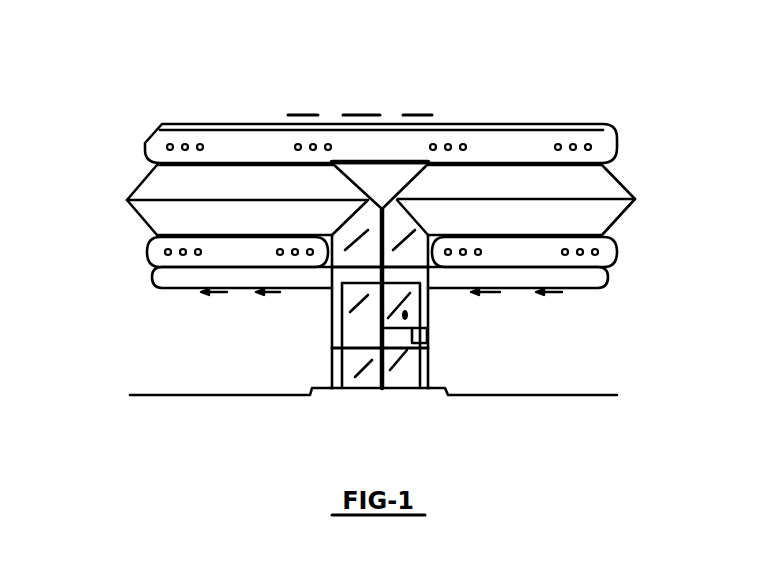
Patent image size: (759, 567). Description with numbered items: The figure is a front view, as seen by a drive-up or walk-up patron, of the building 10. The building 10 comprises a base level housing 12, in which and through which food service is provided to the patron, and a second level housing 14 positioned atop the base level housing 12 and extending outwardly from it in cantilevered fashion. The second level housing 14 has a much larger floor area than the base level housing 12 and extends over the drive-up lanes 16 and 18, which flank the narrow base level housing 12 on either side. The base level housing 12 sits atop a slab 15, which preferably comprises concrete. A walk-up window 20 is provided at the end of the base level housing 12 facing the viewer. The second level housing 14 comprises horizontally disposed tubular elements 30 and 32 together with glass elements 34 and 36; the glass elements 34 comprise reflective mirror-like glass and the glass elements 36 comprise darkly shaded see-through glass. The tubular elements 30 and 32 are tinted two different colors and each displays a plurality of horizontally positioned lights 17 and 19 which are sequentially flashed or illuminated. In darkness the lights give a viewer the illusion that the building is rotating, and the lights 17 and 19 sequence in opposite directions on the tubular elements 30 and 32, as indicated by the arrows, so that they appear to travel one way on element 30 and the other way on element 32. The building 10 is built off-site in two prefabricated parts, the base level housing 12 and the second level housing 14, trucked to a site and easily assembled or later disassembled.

The building 10 is at (386, 252).
The base level housing 12 is at (443, 298).
The second level housing 14 is at (632, 177).
The slab 15 is at (405, 390).
The drive-up lane 16 is at (255, 391).
The lights 17 is at (575, 145).
The drive-up lane 18 is at (582, 390).
The lights 19 is at (600, 248).
The walk-up window 20 is at (414, 338).
The tubular element 30 is at (417, 108).
The tubular element 32 is at (576, 238).
The glass element 34 is at (163, 185).
The glass element 36 is at (167, 223).